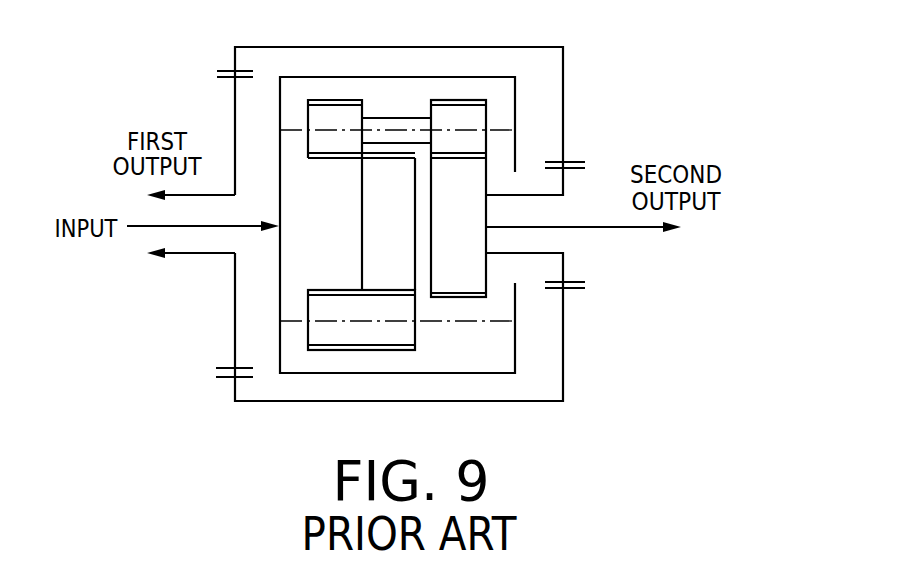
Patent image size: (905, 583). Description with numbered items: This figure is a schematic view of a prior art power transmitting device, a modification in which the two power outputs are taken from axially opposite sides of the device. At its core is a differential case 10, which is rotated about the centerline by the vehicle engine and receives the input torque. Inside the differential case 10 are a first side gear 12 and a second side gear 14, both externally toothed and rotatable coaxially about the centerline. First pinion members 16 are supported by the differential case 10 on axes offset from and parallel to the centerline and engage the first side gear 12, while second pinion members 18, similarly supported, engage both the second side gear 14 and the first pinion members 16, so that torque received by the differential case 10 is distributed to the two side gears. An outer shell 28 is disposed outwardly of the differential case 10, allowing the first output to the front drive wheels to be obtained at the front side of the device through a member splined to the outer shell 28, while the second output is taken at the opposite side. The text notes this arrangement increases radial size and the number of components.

The differential case 10 is at (304, 77).
The first side gear 12 is at (455, 278).
The second side gear 14 is at (382, 178).
The first pinion members 16 is at (413, 123).
The second pinion members 18 is at (362, 328).
The outer shell 28 is at (518, 47).